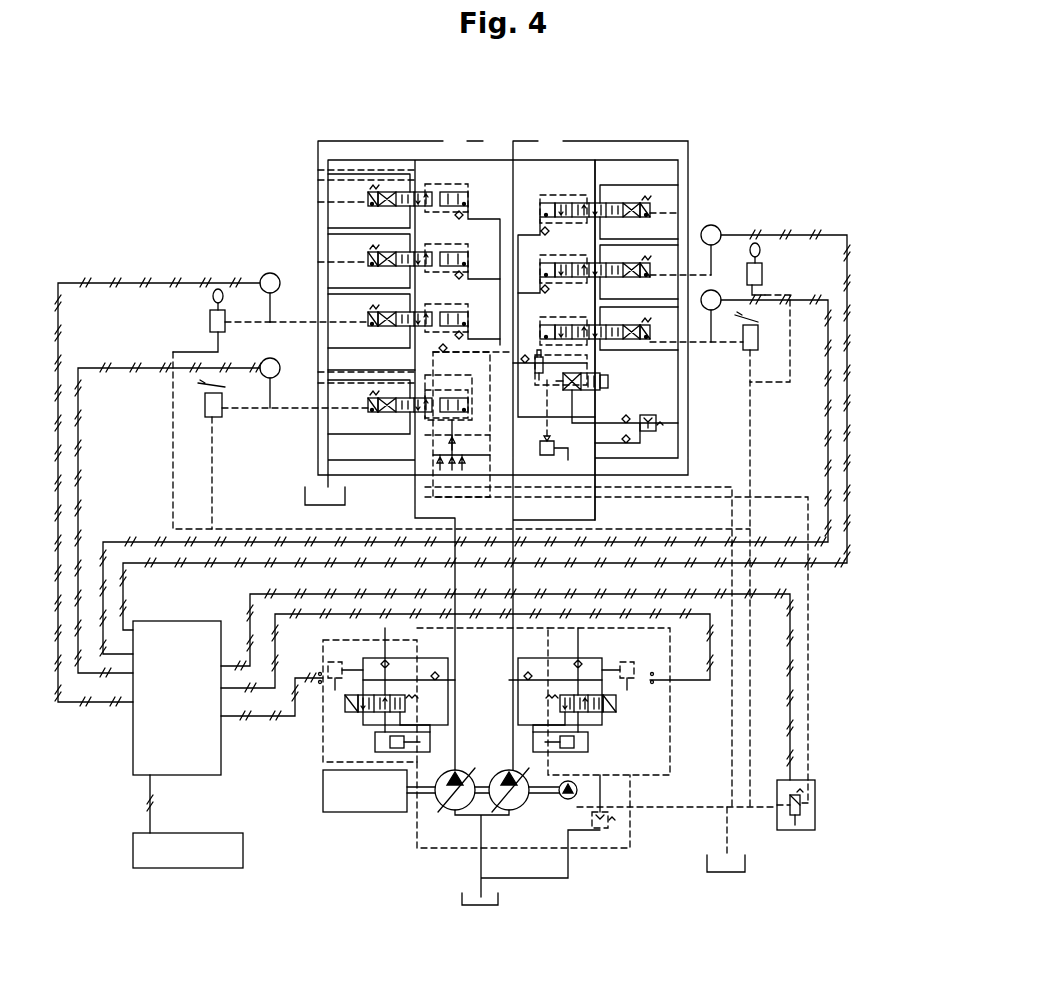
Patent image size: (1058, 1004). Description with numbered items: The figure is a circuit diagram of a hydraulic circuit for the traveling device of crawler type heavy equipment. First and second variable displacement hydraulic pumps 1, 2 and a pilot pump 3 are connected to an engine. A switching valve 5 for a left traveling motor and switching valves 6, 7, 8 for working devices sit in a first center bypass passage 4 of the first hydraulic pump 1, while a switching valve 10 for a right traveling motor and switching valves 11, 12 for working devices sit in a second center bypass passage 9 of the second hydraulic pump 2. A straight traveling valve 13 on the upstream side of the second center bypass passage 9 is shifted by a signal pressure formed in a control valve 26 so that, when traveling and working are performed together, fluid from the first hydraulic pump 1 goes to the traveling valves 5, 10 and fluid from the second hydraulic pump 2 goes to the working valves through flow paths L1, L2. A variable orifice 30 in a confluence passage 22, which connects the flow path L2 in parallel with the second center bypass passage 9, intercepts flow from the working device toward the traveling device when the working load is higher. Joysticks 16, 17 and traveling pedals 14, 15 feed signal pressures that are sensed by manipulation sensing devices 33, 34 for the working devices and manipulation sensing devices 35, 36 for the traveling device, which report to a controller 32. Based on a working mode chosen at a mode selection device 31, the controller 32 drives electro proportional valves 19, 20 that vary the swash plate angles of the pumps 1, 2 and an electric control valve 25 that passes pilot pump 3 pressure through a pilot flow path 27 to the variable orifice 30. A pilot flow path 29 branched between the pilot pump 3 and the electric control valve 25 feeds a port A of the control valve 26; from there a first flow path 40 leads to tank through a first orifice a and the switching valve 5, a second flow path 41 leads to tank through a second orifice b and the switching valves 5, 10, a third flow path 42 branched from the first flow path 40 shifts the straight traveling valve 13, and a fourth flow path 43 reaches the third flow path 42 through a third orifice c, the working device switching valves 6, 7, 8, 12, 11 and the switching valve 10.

The first variable displacement hydraulic pump 1 is at (435, 822).
The second variable displacement hydraulic pump 2 is at (522, 803).
The pilot pump 3 is at (578, 793).
The first center bypass passage 4 is at (415, 514).
The switching valve for left traveling motor 5 is at (397, 413).
The switching valve for working device 6 is at (370, 318).
The switching valve for working device 7 is at (370, 258).
The switching valve for working device 8 is at (370, 198).
The second center bypass passage 9 is at (597, 517).
The switching valve for right traveling motor 10 is at (650, 340).
The switching valve for working device 11 is at (658, 268).
The switching valve for working device 12 is at (655, 205).
The straight traveling valve 13 is at (600, 385).
The traveling pedal 14 is at (205, 404).
The traveling pedal 15 is at (758, 337).
The joystick 16 is at (210, 318).
The joystick 17 is at (762, 270).
The electro proportional valve 19 is at (317, 695).
The electro proportional valve 20 is at (652, 693).
The confluence passage 22 is at (587, 363).
The electric control valve 25 is at (800, 832).
The control valve 26 is at (575, 141).
The pilot flow path 27 is at (808, 665).
The pilot flow path 29 is at (735, 788).
The variable orifice 30 is at (533, 368).
The mode selection device 31 is at (187, 868).
The controller 32 is at (147, 743).
The manipulation sensing device for working device 33 is at (270, 273).
The manipulation sensing device for working device 34 is at (713, 226).
The manipulation sensing device for traveling device 35 is at (279, 375).
The manipulation sensing device for traveling device 36 is at (721, 306).
The first flow path 40 is at (368, 383).
The second flow path 41 is at (480, 350).
The third flow path 42 is at (510, 435).
The fourth flow path 43 is at (547, 402).
The port A is at (452, 470).
The first orifice a is at (440, 470).
The second orifice b is at (452, 450).
The third orifice c is at (462, 470).
The flow path L1 is at (590, 373).
The flow path L2 is at (495, 513).